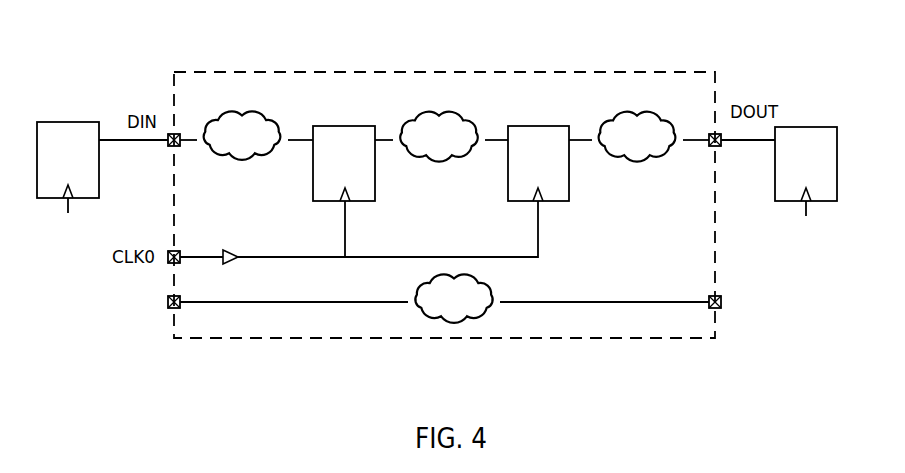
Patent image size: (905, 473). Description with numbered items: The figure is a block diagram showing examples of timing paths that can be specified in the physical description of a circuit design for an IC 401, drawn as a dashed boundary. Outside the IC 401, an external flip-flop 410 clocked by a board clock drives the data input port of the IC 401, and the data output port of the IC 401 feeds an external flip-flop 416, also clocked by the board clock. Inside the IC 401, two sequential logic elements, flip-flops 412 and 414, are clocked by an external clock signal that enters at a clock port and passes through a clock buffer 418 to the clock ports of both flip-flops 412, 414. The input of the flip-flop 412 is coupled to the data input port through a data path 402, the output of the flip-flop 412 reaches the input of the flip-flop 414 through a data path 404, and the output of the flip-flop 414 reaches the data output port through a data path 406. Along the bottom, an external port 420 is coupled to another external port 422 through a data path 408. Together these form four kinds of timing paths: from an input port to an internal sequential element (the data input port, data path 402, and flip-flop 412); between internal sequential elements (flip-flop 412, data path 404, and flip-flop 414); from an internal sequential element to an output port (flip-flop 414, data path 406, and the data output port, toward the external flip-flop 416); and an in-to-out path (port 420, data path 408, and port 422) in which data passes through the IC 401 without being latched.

The IC 401 is at (667, 71).
The data path 402 is at (242, 135).
The data path 404 is at (439, 137).
The data path 406 is at (637, 137).
The data path 408 is at (453, 298).
The external flip-flop 410 is at (68, 120).
The flip-flop 412 is at (375, 183).
The flip-flop 414 is at (569, 183).
The external flip-flop 416 is at (807, 125).
The clock buffer 418 is at (233, 263).
The external port 420 is at (168, 303).
The external port 422 is at (721, 305).